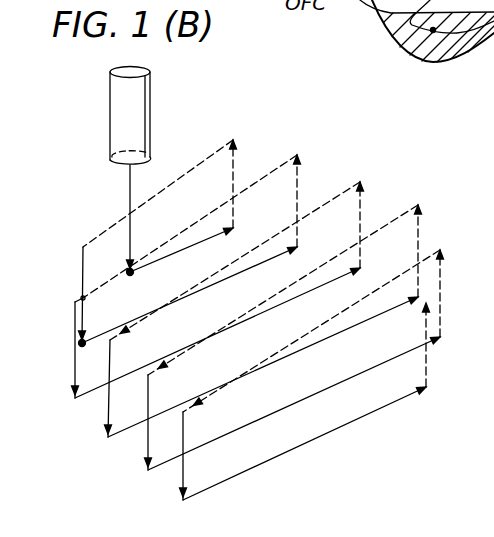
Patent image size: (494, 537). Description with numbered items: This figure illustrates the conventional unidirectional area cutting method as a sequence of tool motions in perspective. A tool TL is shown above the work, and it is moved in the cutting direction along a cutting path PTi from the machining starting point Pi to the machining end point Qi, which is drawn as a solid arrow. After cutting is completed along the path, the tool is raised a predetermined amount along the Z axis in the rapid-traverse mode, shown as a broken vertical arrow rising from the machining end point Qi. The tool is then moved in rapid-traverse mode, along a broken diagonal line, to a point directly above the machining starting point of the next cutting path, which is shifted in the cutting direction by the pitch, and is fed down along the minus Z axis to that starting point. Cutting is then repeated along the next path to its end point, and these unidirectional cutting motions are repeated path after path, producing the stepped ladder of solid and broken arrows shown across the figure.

The tool TL is at (145, 100).
The machining starting point Pi is at (129, 287).
The machining end point Qi is at (244, 191).
The cutting path PTi is at (176, 252).